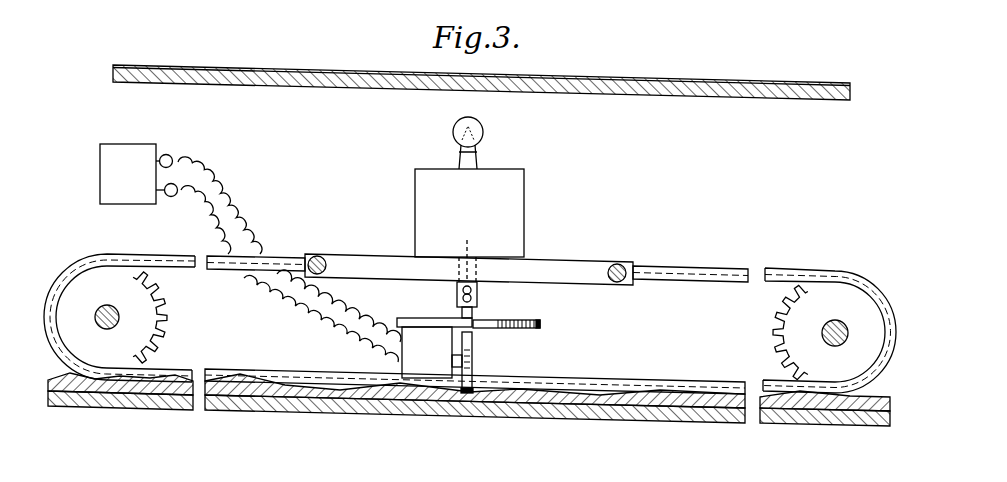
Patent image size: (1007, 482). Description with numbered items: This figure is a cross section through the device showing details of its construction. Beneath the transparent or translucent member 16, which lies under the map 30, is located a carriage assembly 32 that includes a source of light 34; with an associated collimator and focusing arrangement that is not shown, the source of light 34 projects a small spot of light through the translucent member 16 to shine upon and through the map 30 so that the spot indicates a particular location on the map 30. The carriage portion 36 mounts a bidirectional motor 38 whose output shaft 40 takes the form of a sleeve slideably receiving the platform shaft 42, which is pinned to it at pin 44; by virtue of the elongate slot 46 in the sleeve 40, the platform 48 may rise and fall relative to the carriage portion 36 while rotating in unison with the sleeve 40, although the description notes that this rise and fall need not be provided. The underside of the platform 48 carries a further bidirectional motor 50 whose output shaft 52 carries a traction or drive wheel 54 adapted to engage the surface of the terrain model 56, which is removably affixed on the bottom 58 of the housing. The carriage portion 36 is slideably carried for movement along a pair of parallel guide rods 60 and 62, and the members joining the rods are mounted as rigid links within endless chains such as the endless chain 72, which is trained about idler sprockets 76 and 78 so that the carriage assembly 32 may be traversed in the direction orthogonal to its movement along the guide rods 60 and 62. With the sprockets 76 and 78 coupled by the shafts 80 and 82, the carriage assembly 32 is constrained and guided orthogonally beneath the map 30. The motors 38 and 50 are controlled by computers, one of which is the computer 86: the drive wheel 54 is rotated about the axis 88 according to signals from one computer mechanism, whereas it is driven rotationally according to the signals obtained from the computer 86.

The transparent or translucent member 16 is at (593, 94).
The map 30 is at (626, 77).
The carriage assembly 32 is at (505, 226).
The source of light 34 is at (484, 134).
The carriage portion 36 is at (608, 256).
The bidirectional motor 38 is at (525, 200).
The output shaft 40 is at (478, 290).
The platform shaft 42 is at (473, 320).
The pin 44 is at (457, 300).
The elongate slot 46 is at (457, 289).
The platform 48 is at (542, 324).
The bidirectional motor 50 is at (428, 375).
The output shaft 52 is at (460, 362).
The traction or drive wheel 54 is at (468, 388).
The terrain model 56 is at (638, 385).
The bottom 58 is at (632, 421).
The guide rod 60 is at (320, 257).
The guide rod 62 is at (620, 282).
The endless chain 72 is at (703, 267).
The idler sprocket 76 is at (150, 311).
The idler sprocket 78 is at (792, 296).
The shaft 80 is at (116, 292).
The shaft 82 is at (860, 305).
The computer 86 is at (157, 147).
The axis 88 is at (472, 247).